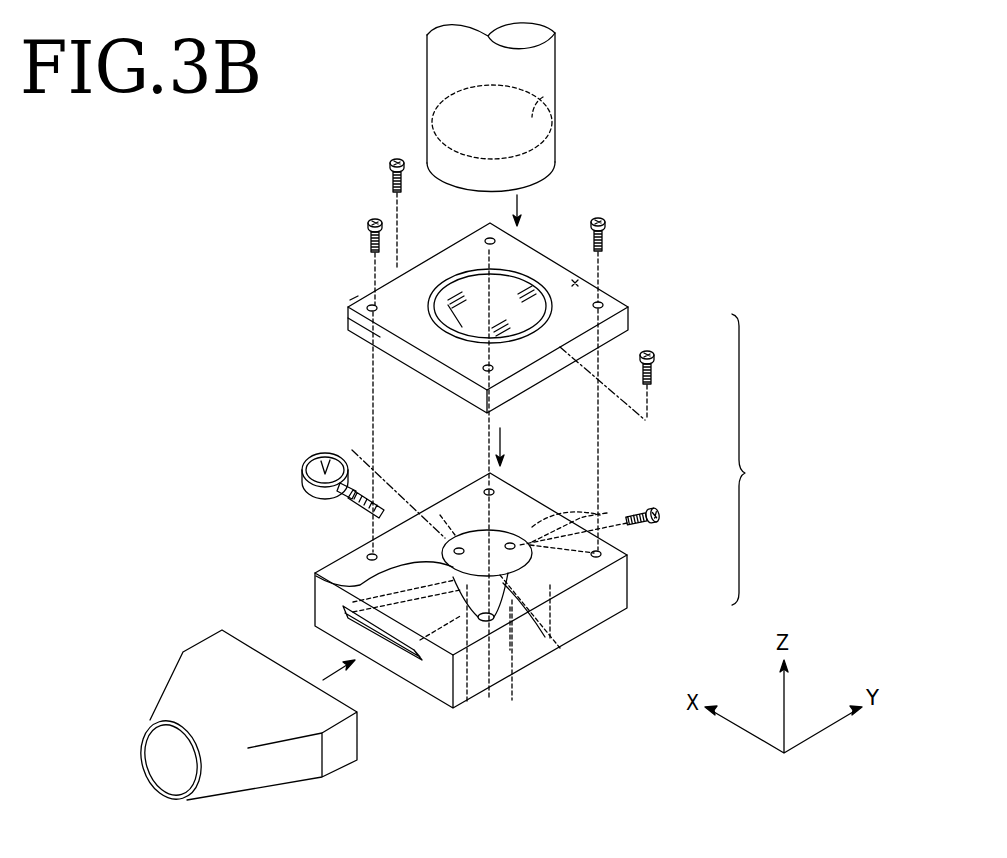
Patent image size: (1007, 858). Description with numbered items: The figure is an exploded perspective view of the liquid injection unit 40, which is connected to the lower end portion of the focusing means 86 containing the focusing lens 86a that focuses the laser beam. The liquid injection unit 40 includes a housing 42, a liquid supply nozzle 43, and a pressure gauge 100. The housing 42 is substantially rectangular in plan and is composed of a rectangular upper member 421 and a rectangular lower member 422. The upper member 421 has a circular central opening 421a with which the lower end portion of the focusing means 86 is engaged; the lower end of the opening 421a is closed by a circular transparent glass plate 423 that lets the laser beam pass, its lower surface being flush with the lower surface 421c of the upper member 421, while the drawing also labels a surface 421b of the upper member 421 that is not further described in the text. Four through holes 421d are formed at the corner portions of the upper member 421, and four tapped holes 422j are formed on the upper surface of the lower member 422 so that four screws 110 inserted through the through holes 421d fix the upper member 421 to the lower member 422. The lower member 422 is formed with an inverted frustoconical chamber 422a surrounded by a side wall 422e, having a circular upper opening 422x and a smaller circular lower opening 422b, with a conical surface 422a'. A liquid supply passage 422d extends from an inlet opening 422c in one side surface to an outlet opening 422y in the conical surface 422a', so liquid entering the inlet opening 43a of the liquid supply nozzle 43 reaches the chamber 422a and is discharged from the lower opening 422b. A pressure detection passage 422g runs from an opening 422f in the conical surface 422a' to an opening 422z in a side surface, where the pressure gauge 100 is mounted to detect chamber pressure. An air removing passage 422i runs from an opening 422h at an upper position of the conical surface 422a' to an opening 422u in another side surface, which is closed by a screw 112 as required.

The focusing means 86 is at (535, 63).
The focusing lens 86a is at (556, 91).
The screws 110 is at (395, 152).
The screw 112 is at (658, 506).
The liquid injection unit 40 is at (296, 346).
The housing 42 is at (754, 459).
The upper member 421 is at (618, 322).
The opening 421a is at (505, 272).
The top surface of upper plate 421b is at (575, 283).
The lower surface 421c is at (386, 356).
The through holes 421d is at (608, 304).
The transparent plate 423 is at (353, 317).
The pressure gauge 100 is at (312, 456).
The lower member 422 is at (610, 590).
The chamber 422a is at (547, 595).
The conical surface 422a' is at (635, 617).
The lower opening 422b is at (532, 662).
The inlet opening 422c is at (400, 647).
The liquid supply passage 422d is at (450, 714).
The side wall 422e is at (562, 648).
The opening 422f is at (465, 533).
The pressure detection passage 422g is at (443, 535).
The opening 422h is at (537, 528).
The air removing passage 422i is at (630, 565).
The tapped holes 422j is at (498, 486).
The opening 422u is at (607, 513).
The upper opening 422x is at (343, 608).
The outlet opening 422y is at (487, 668).
The opening 422z is at (386, 479).
The liquid supply nozzle 43 is at (340, 748).
The inlet opening 43a is at (165, 773).